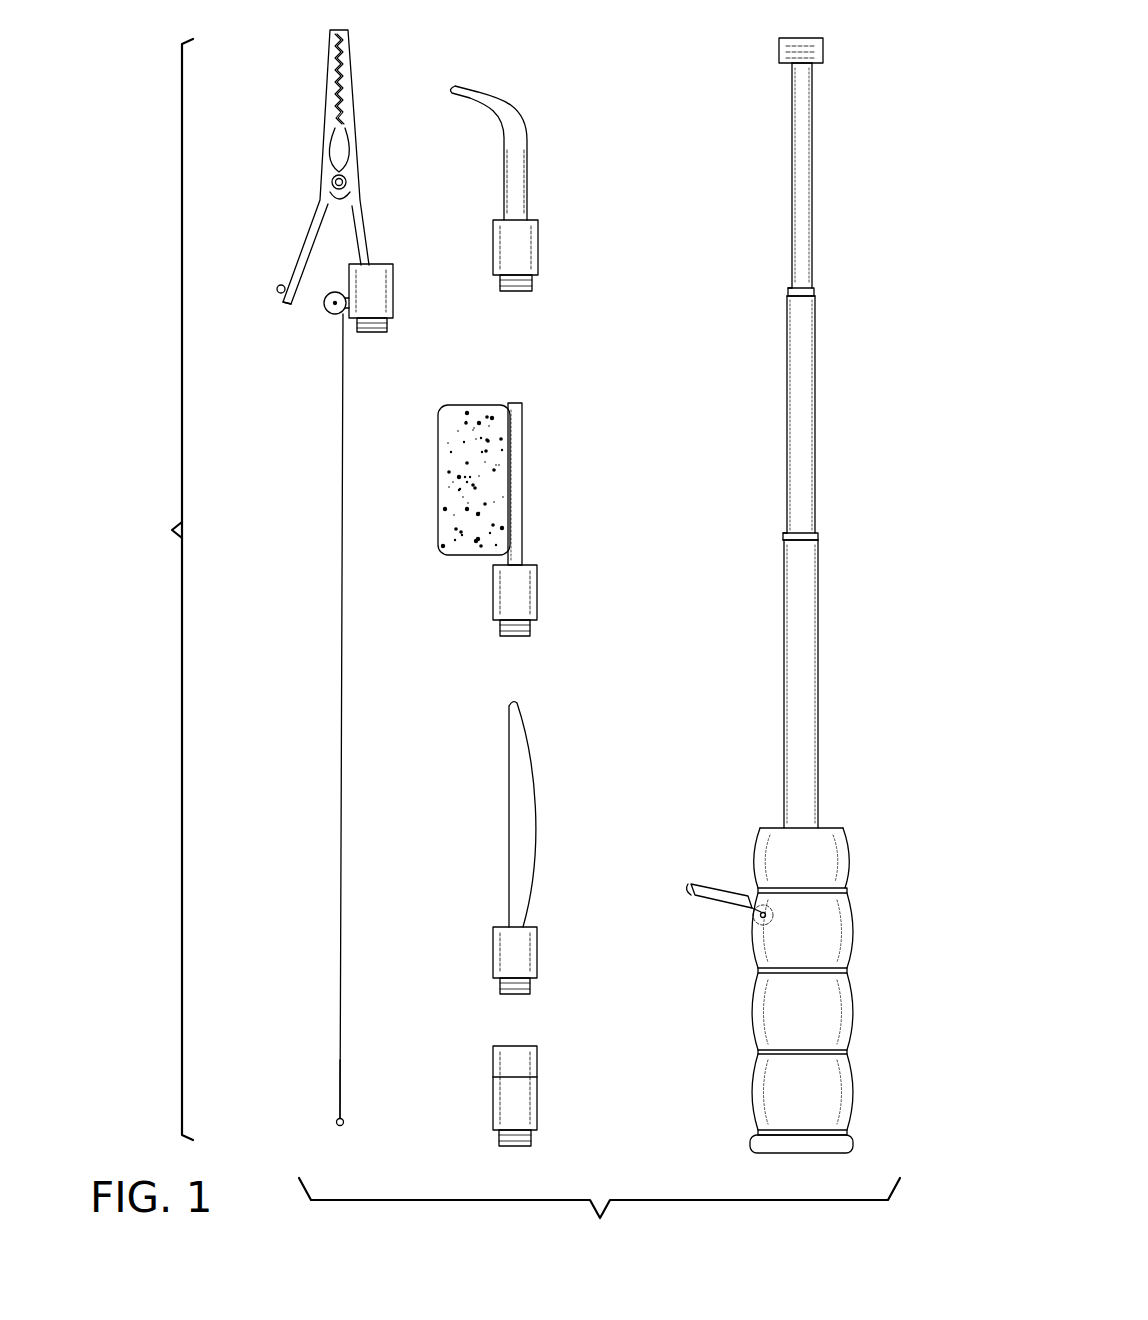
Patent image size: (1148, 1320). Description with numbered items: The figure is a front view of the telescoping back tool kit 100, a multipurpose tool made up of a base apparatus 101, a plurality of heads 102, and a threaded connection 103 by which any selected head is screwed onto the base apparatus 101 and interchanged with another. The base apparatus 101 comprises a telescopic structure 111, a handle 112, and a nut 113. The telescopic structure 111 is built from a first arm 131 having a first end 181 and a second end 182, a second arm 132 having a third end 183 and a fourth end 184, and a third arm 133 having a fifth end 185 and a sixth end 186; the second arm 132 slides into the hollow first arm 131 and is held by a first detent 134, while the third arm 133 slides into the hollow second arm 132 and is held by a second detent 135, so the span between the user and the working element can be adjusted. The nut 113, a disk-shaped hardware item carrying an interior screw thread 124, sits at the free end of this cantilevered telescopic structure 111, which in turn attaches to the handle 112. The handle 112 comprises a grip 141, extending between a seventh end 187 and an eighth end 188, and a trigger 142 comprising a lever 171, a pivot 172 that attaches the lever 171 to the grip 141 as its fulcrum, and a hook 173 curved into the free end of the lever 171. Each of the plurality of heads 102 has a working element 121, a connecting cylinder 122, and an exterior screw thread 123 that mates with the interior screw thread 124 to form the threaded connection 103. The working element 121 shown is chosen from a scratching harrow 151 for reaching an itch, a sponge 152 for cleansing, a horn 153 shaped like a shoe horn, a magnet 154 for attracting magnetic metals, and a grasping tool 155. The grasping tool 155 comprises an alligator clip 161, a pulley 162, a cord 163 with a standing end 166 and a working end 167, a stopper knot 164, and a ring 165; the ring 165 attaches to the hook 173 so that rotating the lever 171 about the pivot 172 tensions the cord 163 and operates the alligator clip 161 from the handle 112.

The telescoping back tool kit 100 is at (121, 118).
The base apparatus 101 is at (742, 62).
The plurality of heads 102 is at (152, 589).
The threaded connection 103 is at (535, 286).
The telescopic structure 111 is at (785, 619).
The handle 112 is at (757, 992).
The nut 113 is at (824, 50).
The working element 121 is at (509, 793).
The connecting cylinder 122 is at (394, 294).
The exterior screw thread 123 is at (388, 331).
The interior screw thread 124 is at (796, 50).
The first arm 131 is at (806, 670).
The second arm 132 is at (801, 383).
The third arm 133 is at (806, 170).
The first detent 134 is at (783, 540).
The second detent 135 is at (788, 296).
The grip 141 is at (830, 1017).
The trigger 142 is at (740, 914).
The scratching harrow 151 is at (518, 124).
The sponge 152 is at (520, 484).
The horn 153 is at (528, 750).
The magnet 154 is at (538, 1060).
The grasping tool 155 is at (348, 28).
The alligator clip 161 is at (325, 127).
The pulley 162 is at (333, 326).
The cord 163 is at (343, 462).
The stopper knot 164 is at (277, 284).
The ring 165 is at (345, 1124).
The standing end 166 is at (337, 1117).
The working end 167 is at (296, 296).
The lever 171 is at (728, 893).
The pivot 172 is at (766, 915).
The hook 173 is at (703, 898).
The first end 181 is at (803, 827).
The second end 182 is at (816, 540).
The third end 183 is at (805, 532).
The fourth end 184 is at (811, 296).
The fifth end 185 is at (800, 285).
The sixth end 186 is at (806, 70).
The seventh end 187 is at (813, 1153).
The eighth end 188 is at (824, 827).